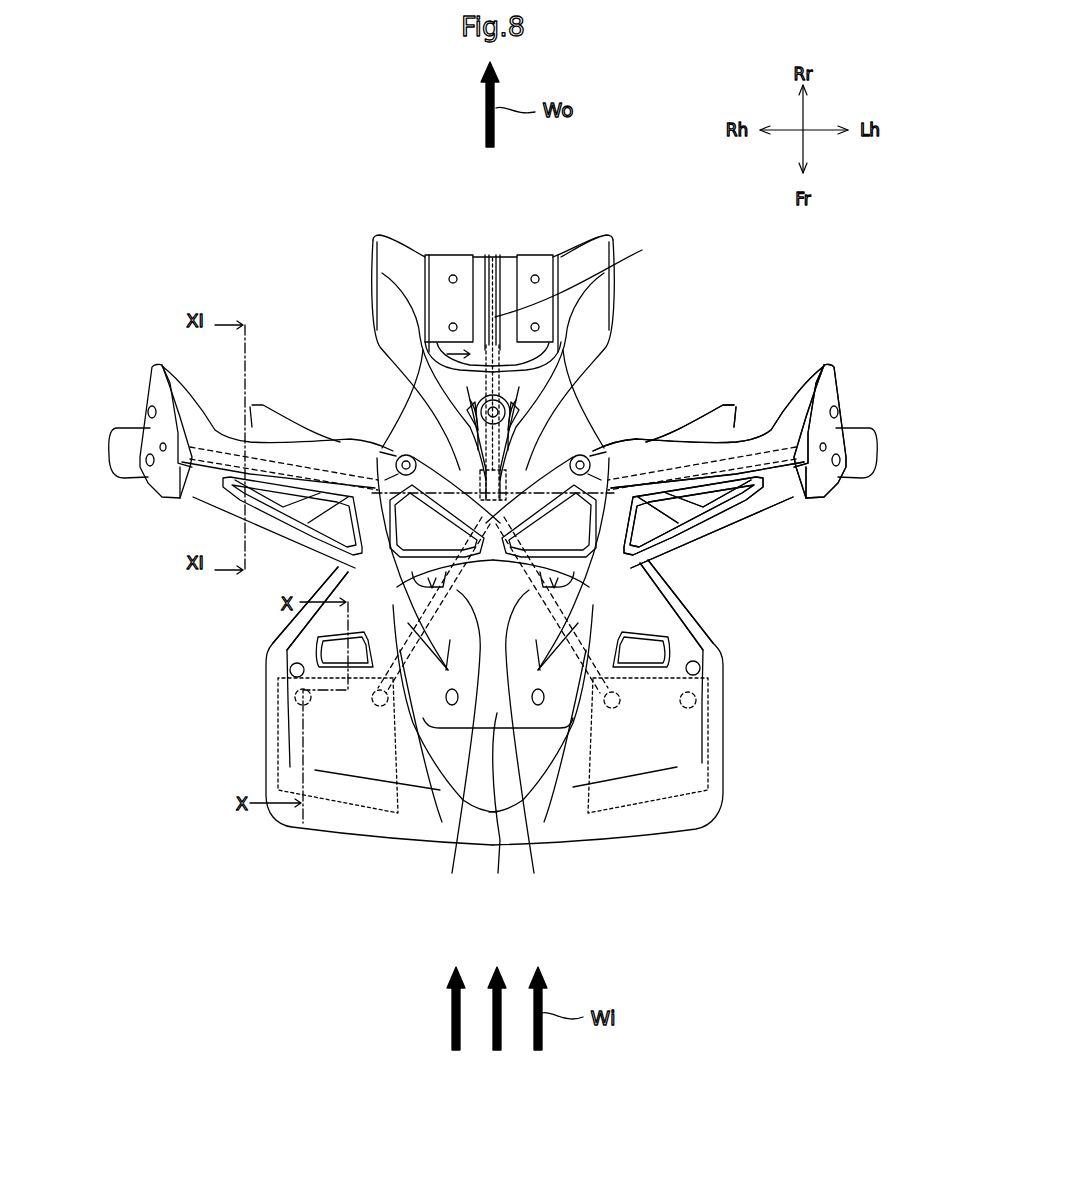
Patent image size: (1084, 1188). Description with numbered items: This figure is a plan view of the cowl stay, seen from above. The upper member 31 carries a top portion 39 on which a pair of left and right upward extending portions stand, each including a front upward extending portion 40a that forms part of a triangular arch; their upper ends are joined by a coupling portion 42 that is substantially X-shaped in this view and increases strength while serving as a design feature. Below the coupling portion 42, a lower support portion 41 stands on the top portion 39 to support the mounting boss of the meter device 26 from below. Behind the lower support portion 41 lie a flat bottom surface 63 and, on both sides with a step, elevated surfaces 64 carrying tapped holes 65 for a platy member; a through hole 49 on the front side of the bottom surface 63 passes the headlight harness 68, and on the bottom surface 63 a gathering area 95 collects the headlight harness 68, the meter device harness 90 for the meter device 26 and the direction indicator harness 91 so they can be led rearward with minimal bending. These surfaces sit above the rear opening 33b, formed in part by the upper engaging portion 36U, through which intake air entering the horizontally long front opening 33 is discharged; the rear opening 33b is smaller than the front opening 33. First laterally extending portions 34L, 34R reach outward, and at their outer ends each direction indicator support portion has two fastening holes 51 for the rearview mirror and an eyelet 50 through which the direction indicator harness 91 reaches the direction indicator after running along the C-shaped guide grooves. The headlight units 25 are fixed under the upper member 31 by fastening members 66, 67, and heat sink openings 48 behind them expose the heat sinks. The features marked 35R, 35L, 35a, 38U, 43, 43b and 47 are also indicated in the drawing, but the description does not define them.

The headlight unit 25 is at (367, 832).
The meter device 26 is at (578, 364).
The upper member 31 is at (322, 840).
The front opening 33 is at (643, 840).
The rear opening 33b is at (577, 240).
The first laterally extending portion 34R is at (292, 453).
The first laterally extending portion 34L is at (703, 457).
The right end plate 35R is at (224, 425).
The left end plate 35L is at (758, 430).
The boss 35a is at (133, 470).
The upper engaging portion 36U is at (390, 254).
The upper lower body 38U is at (677, 815).
The top portion 39 is at (493, 683).
The front upward extending portion 40a is at (393, 598).
The lower support portion 41 is at (520, 410).
The coupling portion 42 is at (568, 422).
The pivot boss 43 is at (400, 458).
The gusset 43b is at (470, 405).
The mounting hole 47 is at (290, 672).
The heat sink opening 48 is at (328, 656).
The through hole 49 is at (581, 275).
The eyelet 50 is at (159, 446).
The fastening hole 51 is at (145, 408).
The bottom surface 63 is at (508, 265).
The elevated surface 64 is at (437, 265).
The tapped hole 65 is at (453, 275).
The fastening member 66 is at (295, 700).
The fastening member 67 is at (372, 698).
The headlight harness 68 is at (496, 801).
The meter device harness 90 is at (481, 404).
The direction indicator harness 91 is at (215, 462).
The gathering area 95 is at (445, 354).